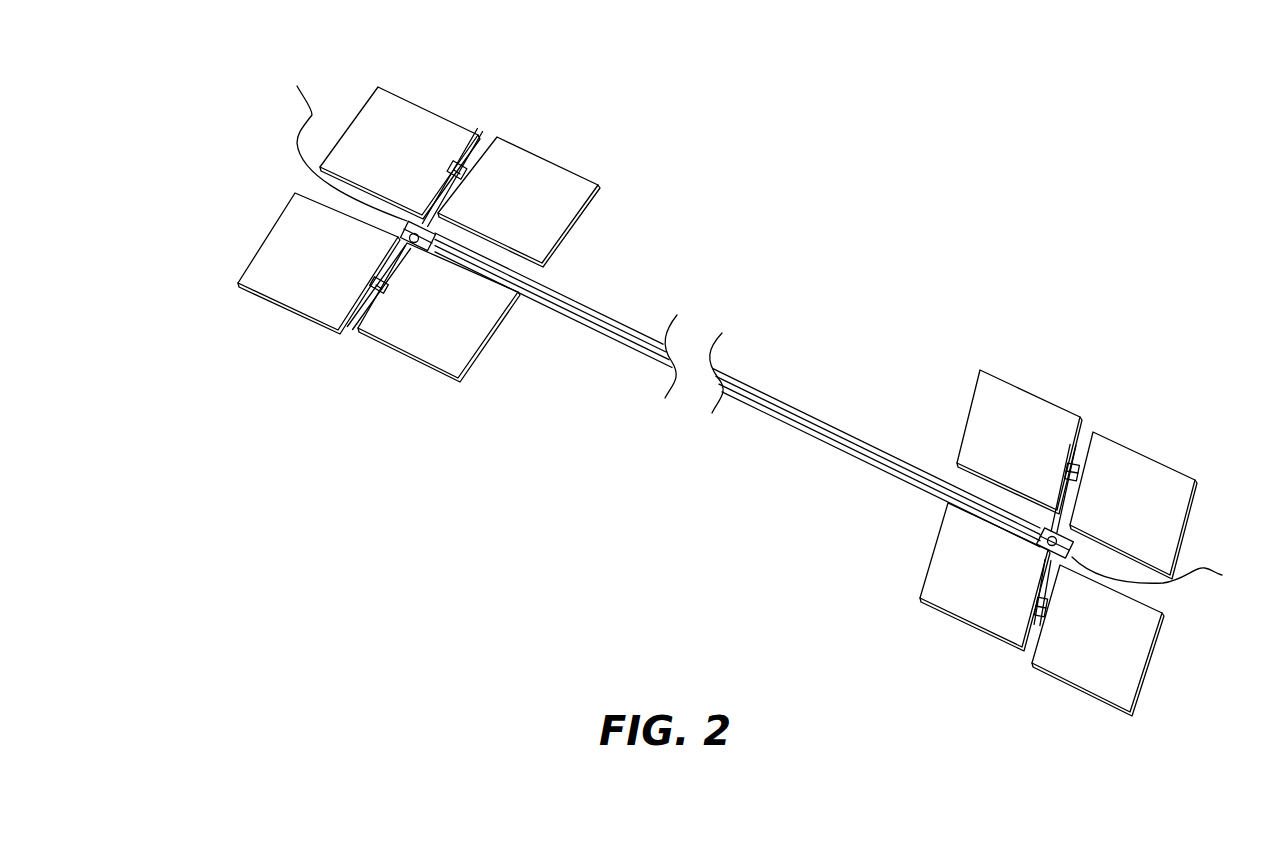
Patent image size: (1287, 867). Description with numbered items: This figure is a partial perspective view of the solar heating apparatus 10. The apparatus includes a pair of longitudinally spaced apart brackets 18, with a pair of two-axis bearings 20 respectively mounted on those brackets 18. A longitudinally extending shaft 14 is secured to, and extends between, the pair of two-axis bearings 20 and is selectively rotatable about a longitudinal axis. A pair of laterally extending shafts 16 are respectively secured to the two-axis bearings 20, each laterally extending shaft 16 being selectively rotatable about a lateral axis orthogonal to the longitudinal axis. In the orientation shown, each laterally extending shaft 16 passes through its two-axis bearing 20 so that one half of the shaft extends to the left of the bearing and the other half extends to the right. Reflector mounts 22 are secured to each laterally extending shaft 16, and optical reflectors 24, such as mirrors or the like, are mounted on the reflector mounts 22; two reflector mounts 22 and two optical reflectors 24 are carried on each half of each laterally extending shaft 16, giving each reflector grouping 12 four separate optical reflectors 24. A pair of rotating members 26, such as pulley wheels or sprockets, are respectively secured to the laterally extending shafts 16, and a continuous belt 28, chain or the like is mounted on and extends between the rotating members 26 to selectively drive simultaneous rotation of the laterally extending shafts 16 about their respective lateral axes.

The solar heating apparatus 10 is at (915, 128).
The reflector grouping 12 is at (270, 192).
The longitudinally extending shaft 14 is at (763, 388).
The laterally extending shaft 16 is at (480, 142).
The bracket 18 is at (759, 328).
The two-axis bearing 20 is at (415, 254).
The reflector mount 22 is at (453, 173).
The optical reflector 24 is at (392, 100).
The rotating member 26 is at (395, 228).
The continuous belt 28 is at (757, 408).